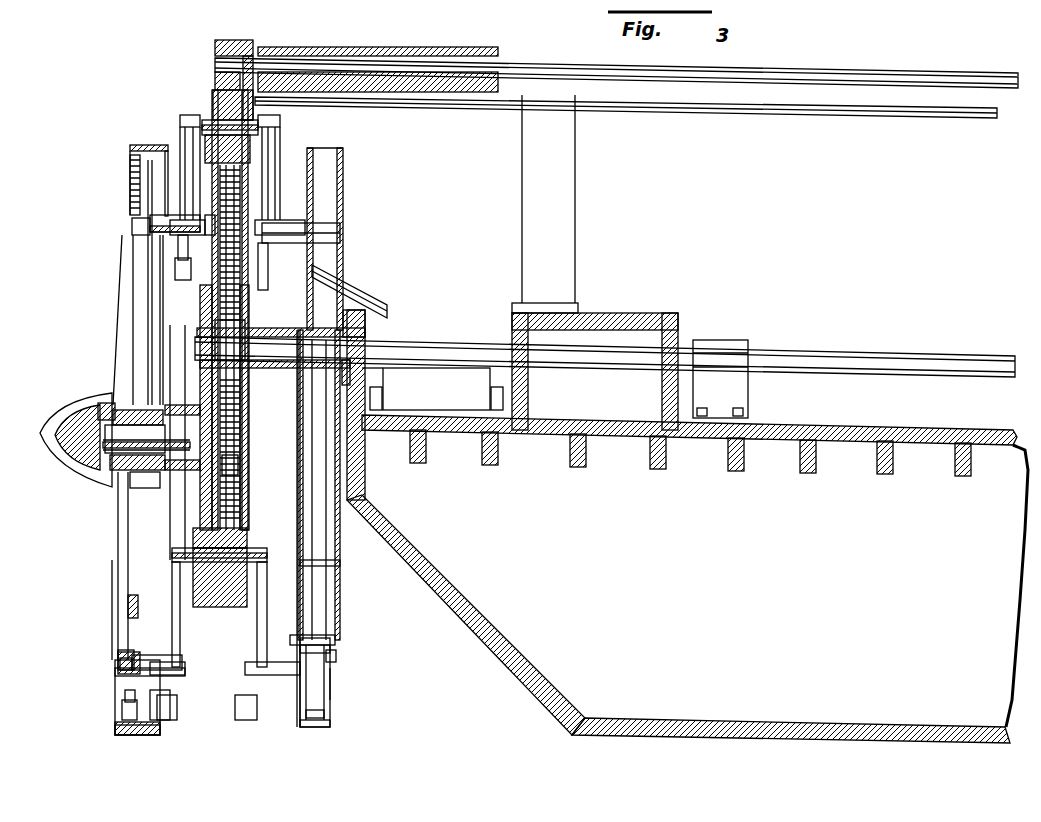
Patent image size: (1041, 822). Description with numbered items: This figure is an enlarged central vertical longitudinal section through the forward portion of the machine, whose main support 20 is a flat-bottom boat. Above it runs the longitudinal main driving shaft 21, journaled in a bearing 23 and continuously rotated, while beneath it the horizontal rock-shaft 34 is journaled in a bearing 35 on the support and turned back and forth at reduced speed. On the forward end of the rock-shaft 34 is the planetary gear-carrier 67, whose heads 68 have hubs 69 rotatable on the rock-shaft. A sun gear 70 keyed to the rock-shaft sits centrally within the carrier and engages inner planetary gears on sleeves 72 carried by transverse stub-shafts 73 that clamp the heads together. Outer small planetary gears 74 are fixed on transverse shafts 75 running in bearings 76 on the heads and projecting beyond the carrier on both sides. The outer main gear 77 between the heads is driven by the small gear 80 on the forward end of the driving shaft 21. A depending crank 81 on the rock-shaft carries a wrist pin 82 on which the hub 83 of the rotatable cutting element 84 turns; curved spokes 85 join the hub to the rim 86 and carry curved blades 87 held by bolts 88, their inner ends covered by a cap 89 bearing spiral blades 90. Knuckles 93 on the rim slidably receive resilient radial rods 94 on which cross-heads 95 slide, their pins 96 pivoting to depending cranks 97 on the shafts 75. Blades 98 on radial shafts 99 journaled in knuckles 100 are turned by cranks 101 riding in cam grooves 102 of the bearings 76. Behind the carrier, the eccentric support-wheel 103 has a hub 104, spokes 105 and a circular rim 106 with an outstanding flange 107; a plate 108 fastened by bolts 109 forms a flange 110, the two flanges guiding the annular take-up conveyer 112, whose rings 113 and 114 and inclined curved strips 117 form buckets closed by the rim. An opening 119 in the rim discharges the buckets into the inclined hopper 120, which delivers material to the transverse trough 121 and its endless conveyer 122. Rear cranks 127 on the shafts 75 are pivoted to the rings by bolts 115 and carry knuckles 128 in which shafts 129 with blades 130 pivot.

The main support or body portion 20 is at (687, 579).
The longitudinal main driving shaft 21 is at (645, 63).
The bearing 23 is at (425, 47).
The rock-shaft 34 is at (840, 357).
The bearing 35 is at (725, 345).
The planetary gear-carrier 67 is at (248, 498).
The end plate or head 68 is at (248, 516).
The hub 69 is at (250, 370).
The sun pinion or gear 70 is at (249, 332).
The sleeve 72 is at (268, 278).
The transverse stub-shaft 73 is at (208, 225).
The outer small planetary gear 74 is at (258, 120).
The transverse shaft 75 is at (260, 133).
The bearing 76 is at (290, 62).
The outer main gear 77 is at (222, 640).
The small gear 80 is at (233, 40).
The depending crank 81 is at (165, 386).
The wrist pin or pivot element 82 is at (165, 470).
The hub 83 is at (170, 548).
The rotatable cutting element or wheel 84 is at (110, 635).
The curved spoke 85 is at (160, 339).
The rim 86 is at (160, 732).
The curved blade 87 is at (148, 312).
The bolt 88 is at (128, 603).
The cap 89 is at (100, 462).
The spiral blade 90 is at (62, 415).
The apertured knuckle 93 is at (130, 158).
The radially disposed rod 94 is at (120, 686).
The cross-head 95 is at (118, 663).
The pin 96 is at (118, 655).
The depending crank 97 is at (130, 197).
The blade 98 is at (175, 270).
The radial shaft 99 is at (125, 697).
The apertured knuckle 100 is at (180, 118).
The laterally extending crank 101 is at (215, 520).
The cam groove 102 is at (213, 100).
The eccentric support-wheel 103 is at (340, 535).
The hub 104 is at (368, 333).
The spoke 105 is at (367, 486).
The circular rim 106 is at (335, 640).
The outstanding flange 107 is at (330, 648).
The plate 108 is at (340, 574).
The screw or bolt 109 is at (336, 660).
The flange 110 is at (297, 690).
The annular take-up conveyer 112 is at (330, 696).
The ring 113 is at (330, 726).
The outer forward ring 114 is at (330, 715).
The bolt 115 is at (336, 668).
The inclined curved strip 117 is at (336, 690).
The opening 119 is at (318, 272).
The inclined hopper 120 is at (380, 305).
The transverse trough 121 is at (530, 410).
The endless conveyer 122 is at (470, 383).
The depending crank 127 is at (343, 194).
The laterally extending knuckle 128 is at (280, 130).
The shaft 129 is at (300, 160).
The blade 130 is at (340, 230).